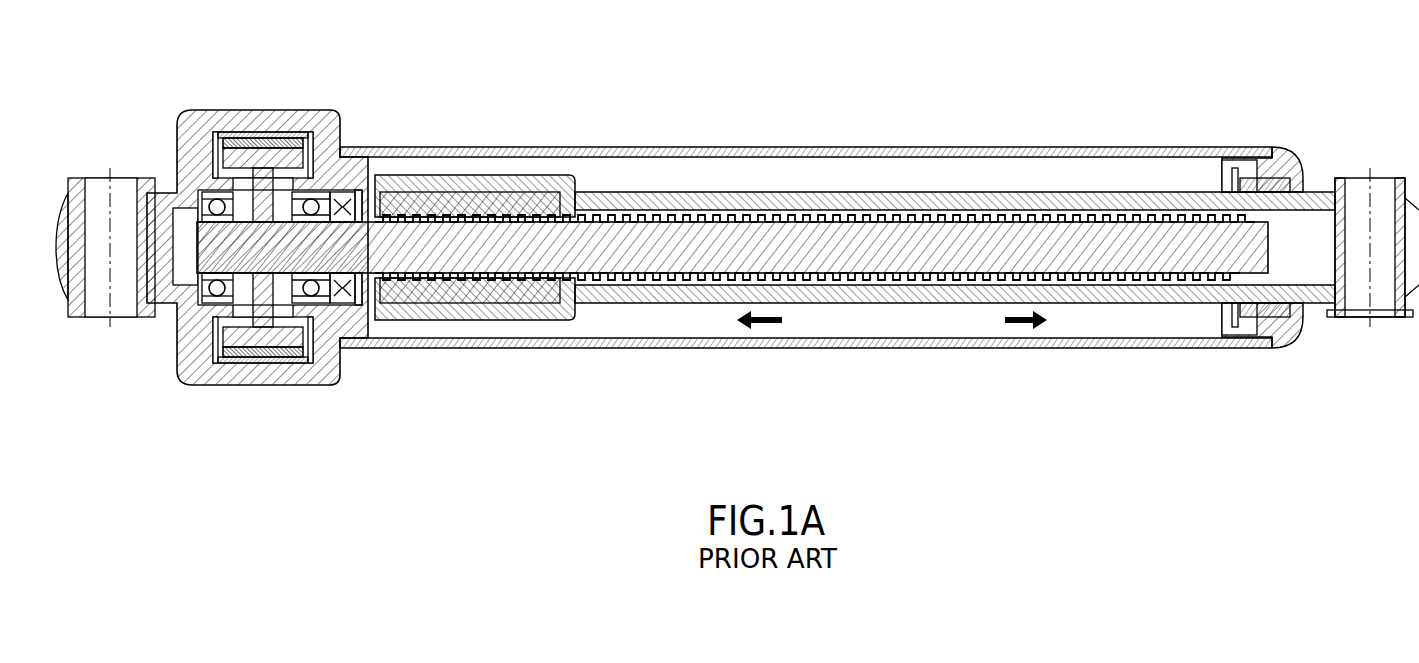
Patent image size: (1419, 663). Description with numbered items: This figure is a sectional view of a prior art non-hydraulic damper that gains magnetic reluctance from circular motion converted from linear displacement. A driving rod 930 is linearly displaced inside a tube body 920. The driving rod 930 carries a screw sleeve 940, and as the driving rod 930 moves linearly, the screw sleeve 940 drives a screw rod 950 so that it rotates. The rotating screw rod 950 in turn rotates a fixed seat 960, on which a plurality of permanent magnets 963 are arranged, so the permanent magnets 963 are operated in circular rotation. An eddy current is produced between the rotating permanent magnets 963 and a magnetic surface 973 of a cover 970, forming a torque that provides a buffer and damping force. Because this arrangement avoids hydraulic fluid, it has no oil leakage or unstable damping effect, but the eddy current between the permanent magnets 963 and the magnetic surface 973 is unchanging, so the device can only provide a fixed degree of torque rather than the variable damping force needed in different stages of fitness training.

The tube body 920 is at (955, 349).
The driving rod 930 is at (980, 191).
The screw sleeve 940 is at (486, 293).
The screw rod 950 is at (690, 243).
The fixed seat 960 is at (247, 133).
The permanent magnets 963 is at (297, 143).
The cover 970 is at (187, 130).
The magnetic surface 973 is at (273, 367).